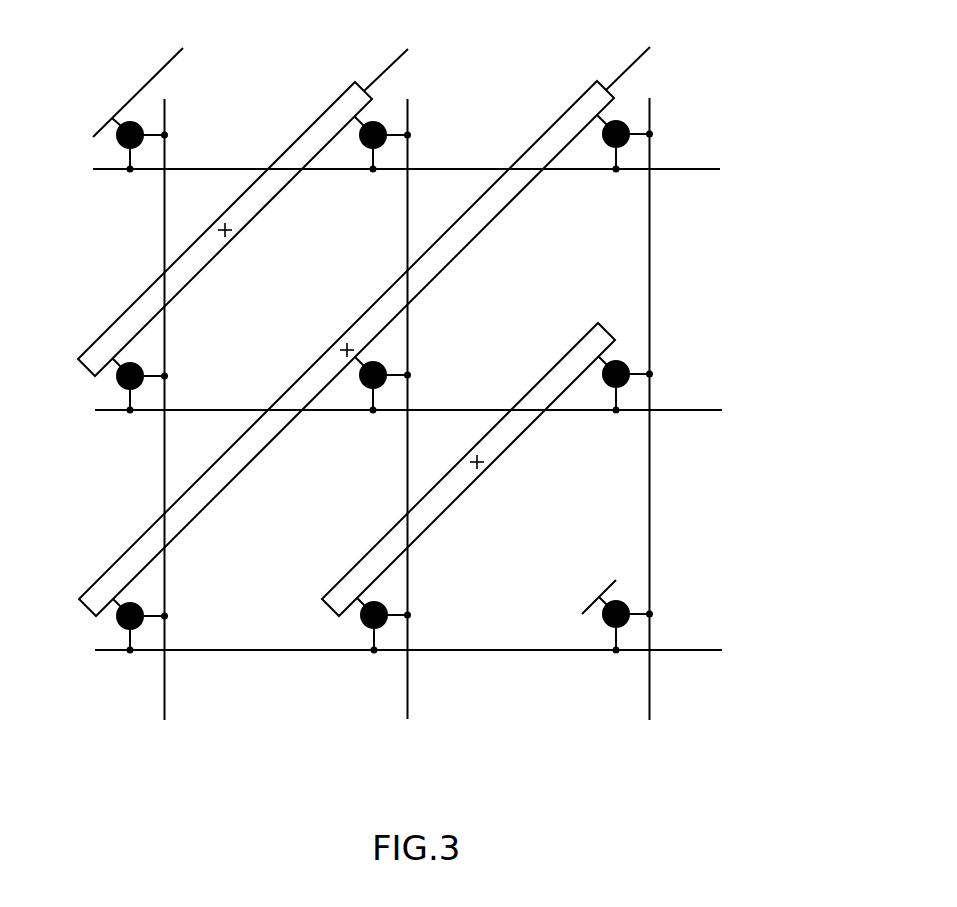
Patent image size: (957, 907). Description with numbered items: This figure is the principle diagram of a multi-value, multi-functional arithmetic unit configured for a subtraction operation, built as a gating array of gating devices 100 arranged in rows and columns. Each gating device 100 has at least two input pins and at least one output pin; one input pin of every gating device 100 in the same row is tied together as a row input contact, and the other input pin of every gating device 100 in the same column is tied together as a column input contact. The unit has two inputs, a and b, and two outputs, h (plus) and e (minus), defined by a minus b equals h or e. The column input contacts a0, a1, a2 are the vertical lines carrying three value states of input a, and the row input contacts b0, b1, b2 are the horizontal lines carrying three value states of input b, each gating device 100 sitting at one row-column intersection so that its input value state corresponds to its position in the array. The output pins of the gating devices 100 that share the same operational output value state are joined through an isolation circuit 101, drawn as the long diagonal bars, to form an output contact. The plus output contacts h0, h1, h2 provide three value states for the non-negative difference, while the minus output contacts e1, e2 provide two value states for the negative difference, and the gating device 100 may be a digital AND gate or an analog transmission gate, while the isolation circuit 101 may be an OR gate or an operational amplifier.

The gating device 100 is at (627, 382).
The isolation circuit 101 is at (545, 150).
The column input contact a0 is at (164, 424).
The column input contact a1 is at (406, 424).
The column input contact a2 is at (650, 423).
The row input contact b0 is at (388, 651).
The row input contact b1 is at (388, 410).
The row input contact b2 is at (387, 170).
The output contact (minus) e1 is at (248, 198).
The output contact (minus) e2 is at (144, 79).
The output contact (plus) h0 is at (454, 317).
The output contact (plus) h1 is at (607, 331).
The output contact (plus) h2 is at (616, 580).